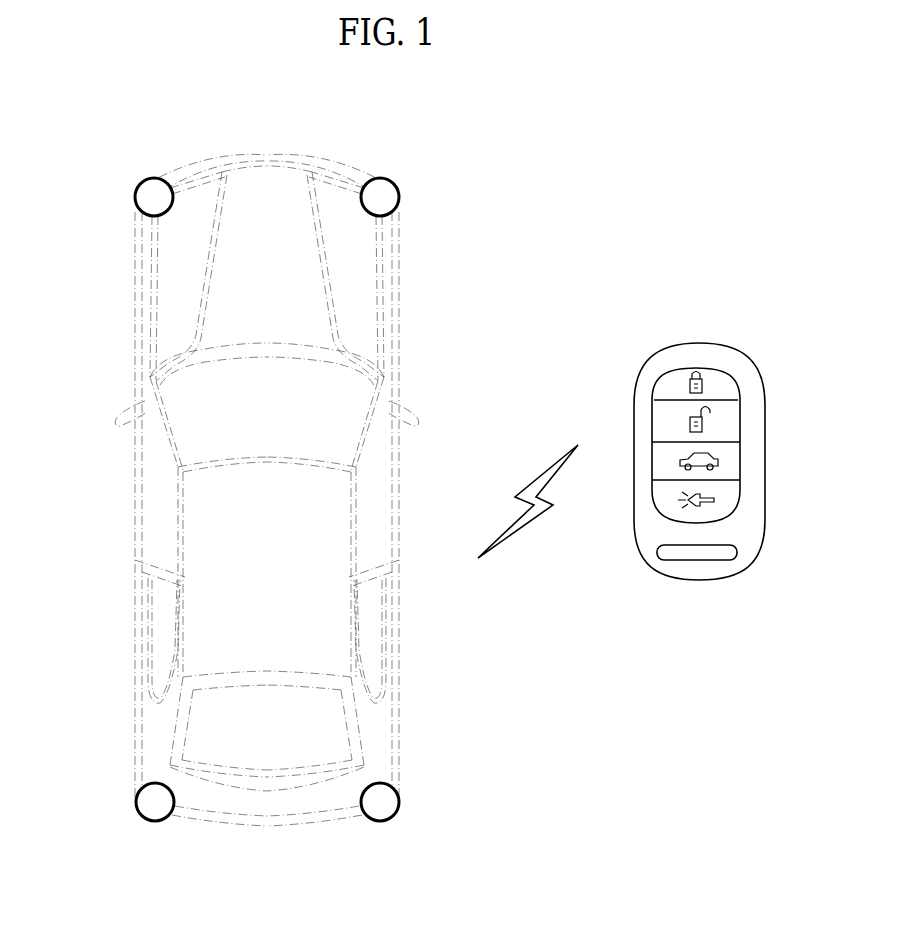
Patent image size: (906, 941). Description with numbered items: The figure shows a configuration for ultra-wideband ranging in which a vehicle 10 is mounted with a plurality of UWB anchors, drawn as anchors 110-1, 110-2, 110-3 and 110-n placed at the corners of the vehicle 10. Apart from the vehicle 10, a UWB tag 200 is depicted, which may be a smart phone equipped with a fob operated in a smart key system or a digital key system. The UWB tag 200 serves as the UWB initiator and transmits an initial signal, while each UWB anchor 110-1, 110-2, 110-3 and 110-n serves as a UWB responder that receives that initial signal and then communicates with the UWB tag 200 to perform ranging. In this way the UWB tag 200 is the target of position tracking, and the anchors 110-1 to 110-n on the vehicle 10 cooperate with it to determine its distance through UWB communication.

The vehicle 10 is at (267, 154).
The UWB anchor 110-1 is at (140, 182).
The UWB anchor 110-2 is at (394, 182).
The UWB anchor 110-3 is at (136, 798).
The UWB anchor 110-n is at (399, 798).
The UWB tag 200 is at (697, 342).